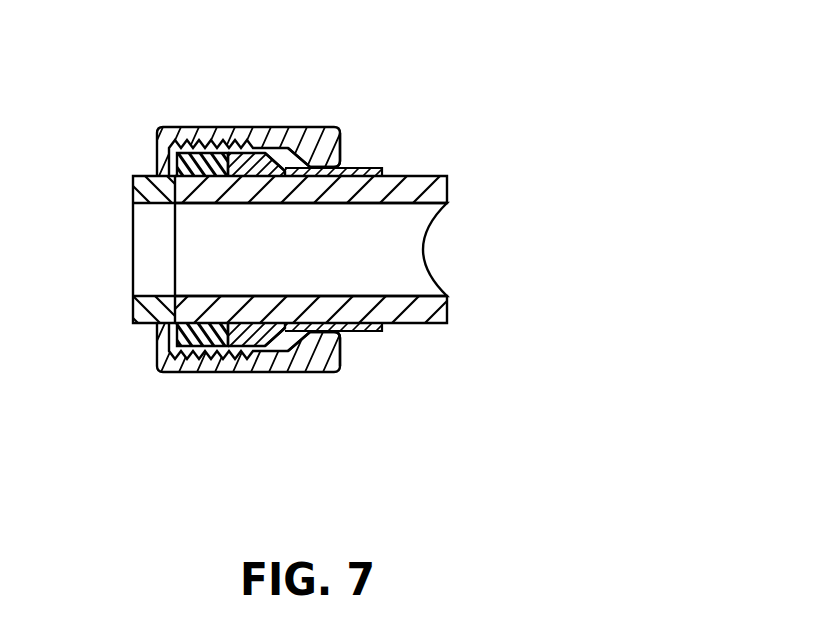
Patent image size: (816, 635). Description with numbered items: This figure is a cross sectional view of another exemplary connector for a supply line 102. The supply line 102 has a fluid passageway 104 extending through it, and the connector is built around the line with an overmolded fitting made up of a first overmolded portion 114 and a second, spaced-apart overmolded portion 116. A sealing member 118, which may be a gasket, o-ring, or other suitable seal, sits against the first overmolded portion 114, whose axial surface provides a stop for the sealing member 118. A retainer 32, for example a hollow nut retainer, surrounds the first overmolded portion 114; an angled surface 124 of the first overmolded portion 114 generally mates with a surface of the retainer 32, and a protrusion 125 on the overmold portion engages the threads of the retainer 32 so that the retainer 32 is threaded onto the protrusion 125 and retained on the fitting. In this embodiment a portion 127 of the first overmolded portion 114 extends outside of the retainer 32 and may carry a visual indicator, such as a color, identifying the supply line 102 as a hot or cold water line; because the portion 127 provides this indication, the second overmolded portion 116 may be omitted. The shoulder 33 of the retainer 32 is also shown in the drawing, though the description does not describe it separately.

The retainer 32 is at (250, 125).
The nut shoulder 33 is at (342, 148).
The supply line 102 is at (440, 171).
The fluid passageway 104 is at (404, 243).
The first overmolded portion 114 is at (240, 345).
The second overmolded portion 116 is at (131, 311).
The sealing member 118 is at (202, 165).
The angled surface 124 is at (289, 345).
The protrusion 125 is at (275, 352).
The portion of overmold portion 127 is at (383, 333).